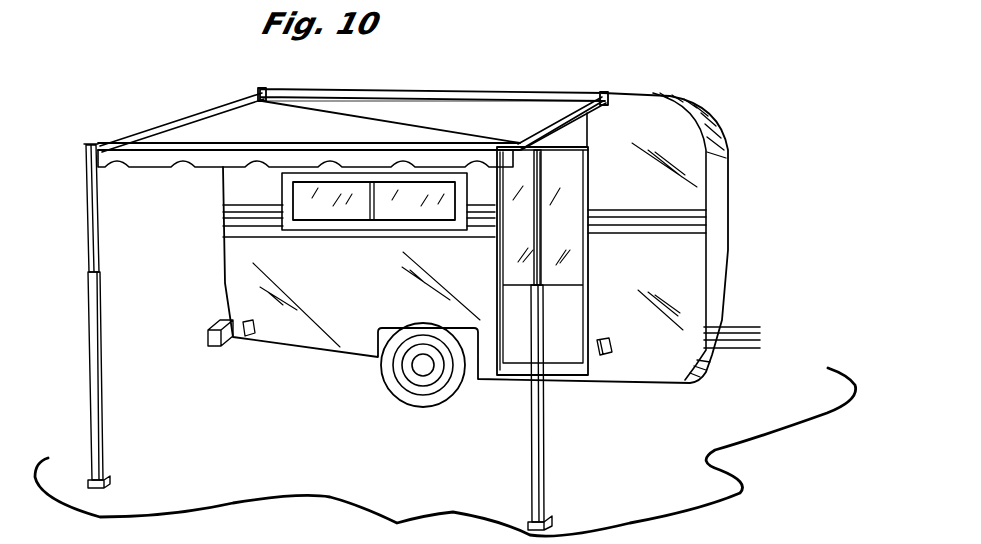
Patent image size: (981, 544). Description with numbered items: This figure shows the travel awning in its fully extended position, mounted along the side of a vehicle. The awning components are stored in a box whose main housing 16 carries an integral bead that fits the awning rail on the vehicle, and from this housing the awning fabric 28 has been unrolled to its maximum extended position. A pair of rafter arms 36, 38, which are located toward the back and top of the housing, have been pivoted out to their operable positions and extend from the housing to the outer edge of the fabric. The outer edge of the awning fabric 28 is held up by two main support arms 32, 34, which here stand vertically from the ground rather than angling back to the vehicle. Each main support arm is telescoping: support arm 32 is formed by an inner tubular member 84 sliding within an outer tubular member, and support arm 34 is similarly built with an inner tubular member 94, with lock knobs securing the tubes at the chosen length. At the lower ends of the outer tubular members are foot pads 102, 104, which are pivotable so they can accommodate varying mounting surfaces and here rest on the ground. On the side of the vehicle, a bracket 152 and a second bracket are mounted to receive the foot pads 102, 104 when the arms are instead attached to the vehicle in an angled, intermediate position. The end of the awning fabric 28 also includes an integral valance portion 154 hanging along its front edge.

The main housing 16 is at (427, 95).
The awning fabric 28 is at (493, 120).
The rafter arm 36 is at (160, 128).
The rafter arm 38 is at (566, 124).
The inner tubular member 84 is at (96, 224).
The main support arm 32 is at (101, 372).
The inner tubular member 94 is at (540, 208).
The main support arm 34 is at (543, 456).
The foot pad 102 is at (110, 484).
The foot pad 104 is at (548, 518).
The bracket 152 is at (250, 336).
The integral valance portion 154 is at (357, 160).